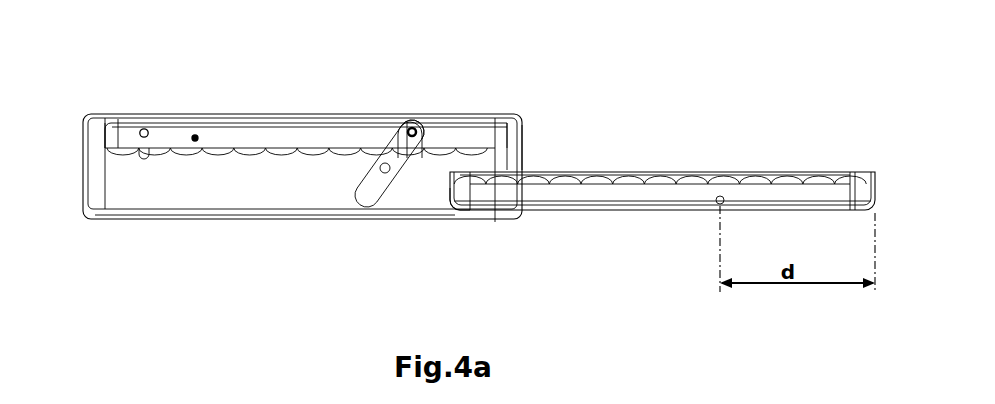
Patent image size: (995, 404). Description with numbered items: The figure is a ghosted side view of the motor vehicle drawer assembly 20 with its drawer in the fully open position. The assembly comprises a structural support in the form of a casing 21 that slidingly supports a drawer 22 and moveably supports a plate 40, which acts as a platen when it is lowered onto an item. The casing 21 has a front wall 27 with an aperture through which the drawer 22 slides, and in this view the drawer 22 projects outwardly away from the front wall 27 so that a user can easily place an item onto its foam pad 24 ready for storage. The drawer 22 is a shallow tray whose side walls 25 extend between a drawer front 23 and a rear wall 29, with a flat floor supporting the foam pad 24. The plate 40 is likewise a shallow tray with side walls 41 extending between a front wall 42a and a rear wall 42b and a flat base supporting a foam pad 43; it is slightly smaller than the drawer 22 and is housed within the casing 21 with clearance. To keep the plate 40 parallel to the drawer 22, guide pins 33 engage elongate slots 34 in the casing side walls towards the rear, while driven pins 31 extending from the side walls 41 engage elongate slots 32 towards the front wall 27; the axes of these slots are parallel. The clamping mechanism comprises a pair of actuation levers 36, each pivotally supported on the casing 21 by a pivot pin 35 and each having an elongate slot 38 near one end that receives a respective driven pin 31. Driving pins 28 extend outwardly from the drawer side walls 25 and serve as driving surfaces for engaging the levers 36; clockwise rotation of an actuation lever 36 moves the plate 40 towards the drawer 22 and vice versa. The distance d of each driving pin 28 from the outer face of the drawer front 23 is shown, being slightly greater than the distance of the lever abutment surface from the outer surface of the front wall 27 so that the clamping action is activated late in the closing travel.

The motor vehicle drawer assembly 20 is at (190, 219).
The casing 21 is at (326, 220).
The drawer 22 is at (675, 172).
The drawer front 23 is at (842, 130).
The foam pad 24 is at (538, 178).
The side wall 25 is at (617, 175).
The front wall 27 is at (523, 138).
The driving pin 28 is at (720, 196).
The rear wall 29 is at (442, 234).
The driven pin 31 is at (410, 128).
The elongate slot 32 is at (420, 146).
The guide pin 33 is at (141, 130).
The elongate slot 34 is at (151, 146).
The pivot pin 35 is at (382, 165).
The actuation lever 36 is at (387, 143).
The elongate slot 38 is at (403, 141).
The plate 40 is at (478, 120).
The side wall 41 is at (195, 135).
The front wall 42a is at (510, 137).
The rear wall 42b is at (100, 138).
The foam pad 43 is at (306, 118).